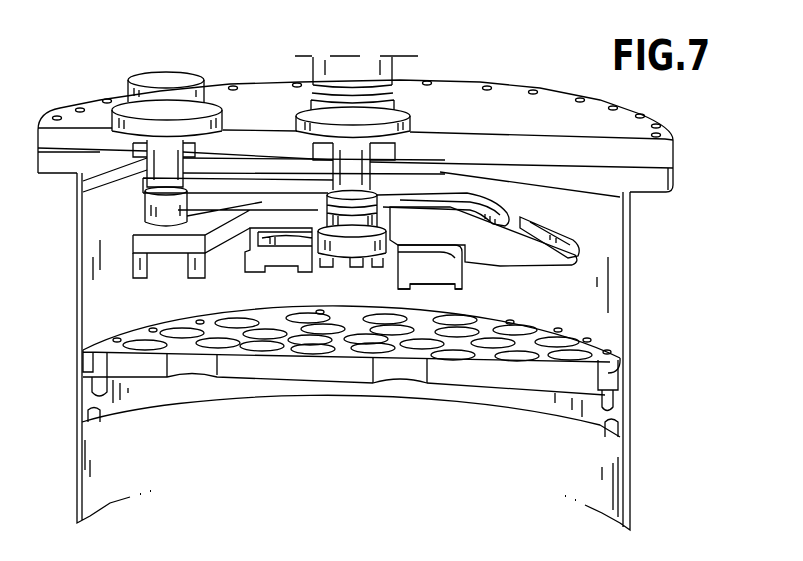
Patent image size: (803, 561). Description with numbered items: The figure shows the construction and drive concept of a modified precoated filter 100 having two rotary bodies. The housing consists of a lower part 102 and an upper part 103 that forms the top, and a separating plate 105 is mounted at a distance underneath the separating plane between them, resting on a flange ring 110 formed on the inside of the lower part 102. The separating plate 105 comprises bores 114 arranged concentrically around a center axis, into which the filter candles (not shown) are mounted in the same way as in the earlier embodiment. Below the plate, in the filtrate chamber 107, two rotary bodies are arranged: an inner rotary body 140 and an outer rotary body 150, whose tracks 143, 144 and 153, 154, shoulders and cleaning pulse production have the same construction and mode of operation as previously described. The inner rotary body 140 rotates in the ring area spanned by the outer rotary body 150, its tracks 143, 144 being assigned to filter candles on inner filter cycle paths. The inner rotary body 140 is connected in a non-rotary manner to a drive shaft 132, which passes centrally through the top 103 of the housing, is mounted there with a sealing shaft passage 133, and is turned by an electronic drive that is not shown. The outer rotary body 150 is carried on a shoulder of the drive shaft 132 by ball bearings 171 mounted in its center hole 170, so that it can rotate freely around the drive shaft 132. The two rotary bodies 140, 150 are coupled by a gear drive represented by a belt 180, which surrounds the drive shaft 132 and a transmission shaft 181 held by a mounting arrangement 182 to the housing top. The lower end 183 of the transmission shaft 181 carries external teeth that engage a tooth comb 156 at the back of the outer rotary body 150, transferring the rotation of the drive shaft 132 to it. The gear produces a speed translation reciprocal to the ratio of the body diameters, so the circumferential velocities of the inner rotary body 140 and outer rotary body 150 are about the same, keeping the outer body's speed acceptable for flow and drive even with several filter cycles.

The precoated filter 100 is at (546, 48).
The lower part of the housing 102 is at (666, 190).
The upper part of the housing 103 is at (543, 110).
The separating plate 105 is at (517, 378).
The filtrate chamber 107 is at (606, 267).
The flange ring 110 is at (123, 400).
The bores 114 is at (518, 327).
The drive shaft 132 is at (390, 172).
The sealing shaft passage 133 is at (405, 127).
The inner rotary body 140 is at (447, 277).
The track 143 is at (299, 255).
The track 144 is at (457, 290).
The outer rotary body 150 is at (573, 252).
The track 153 is at (193, 283).
The track 154 is at (136, 284).
The tooth comb 156 is at (510, 212).
The center hole 170 is at (417, 193).
The ball bearings 171 is at (312, 212).
The belt 180 is at (223, 186).
The transmission shaft 181 is at (83, 181).
The mounting arrangement 182 is at (165, 123).
The lower end of the transmission shaft 183 is at (147, 213).